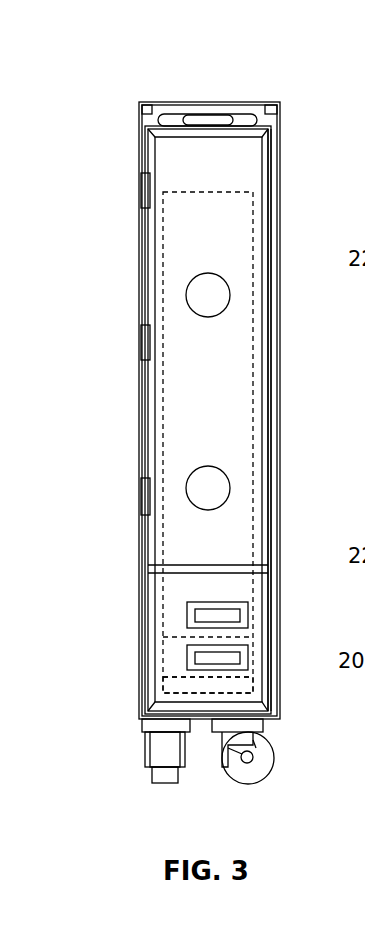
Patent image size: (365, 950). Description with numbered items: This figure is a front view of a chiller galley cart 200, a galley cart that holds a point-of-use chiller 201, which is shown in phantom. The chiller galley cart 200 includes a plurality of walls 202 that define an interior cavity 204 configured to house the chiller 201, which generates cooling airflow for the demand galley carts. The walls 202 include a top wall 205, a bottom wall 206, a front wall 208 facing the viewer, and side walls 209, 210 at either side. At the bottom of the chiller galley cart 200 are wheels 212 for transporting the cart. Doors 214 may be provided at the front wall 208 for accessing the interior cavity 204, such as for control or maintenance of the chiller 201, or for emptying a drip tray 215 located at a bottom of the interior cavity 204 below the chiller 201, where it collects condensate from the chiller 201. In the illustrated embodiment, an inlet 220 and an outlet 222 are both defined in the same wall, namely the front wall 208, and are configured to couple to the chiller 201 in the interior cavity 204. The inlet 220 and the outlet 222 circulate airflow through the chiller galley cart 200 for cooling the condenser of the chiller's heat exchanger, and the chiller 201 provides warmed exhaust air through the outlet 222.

The chiller galley cart 200 is at (155, 71).
The point-of-use chiller 201 is at (180, 192).
The walls 202 is at (280, 163).
The interior cavity 204 is at (230, 156).
The top wall 205 is at (207, 103).
The bottom wall 206 is at (202, 727).
The front wall 208 is at (187, 405).
The side wall 209 is at (141, 538).
The side wall 210 is at (280, 571).
The wheels 212 is at (152, 781).
The doors 214 is at (170, 652).
The drip tray 215 is at (170, 685).
The inlet 220 is at (186, 295).
The outlet 222 is at (186, 488).